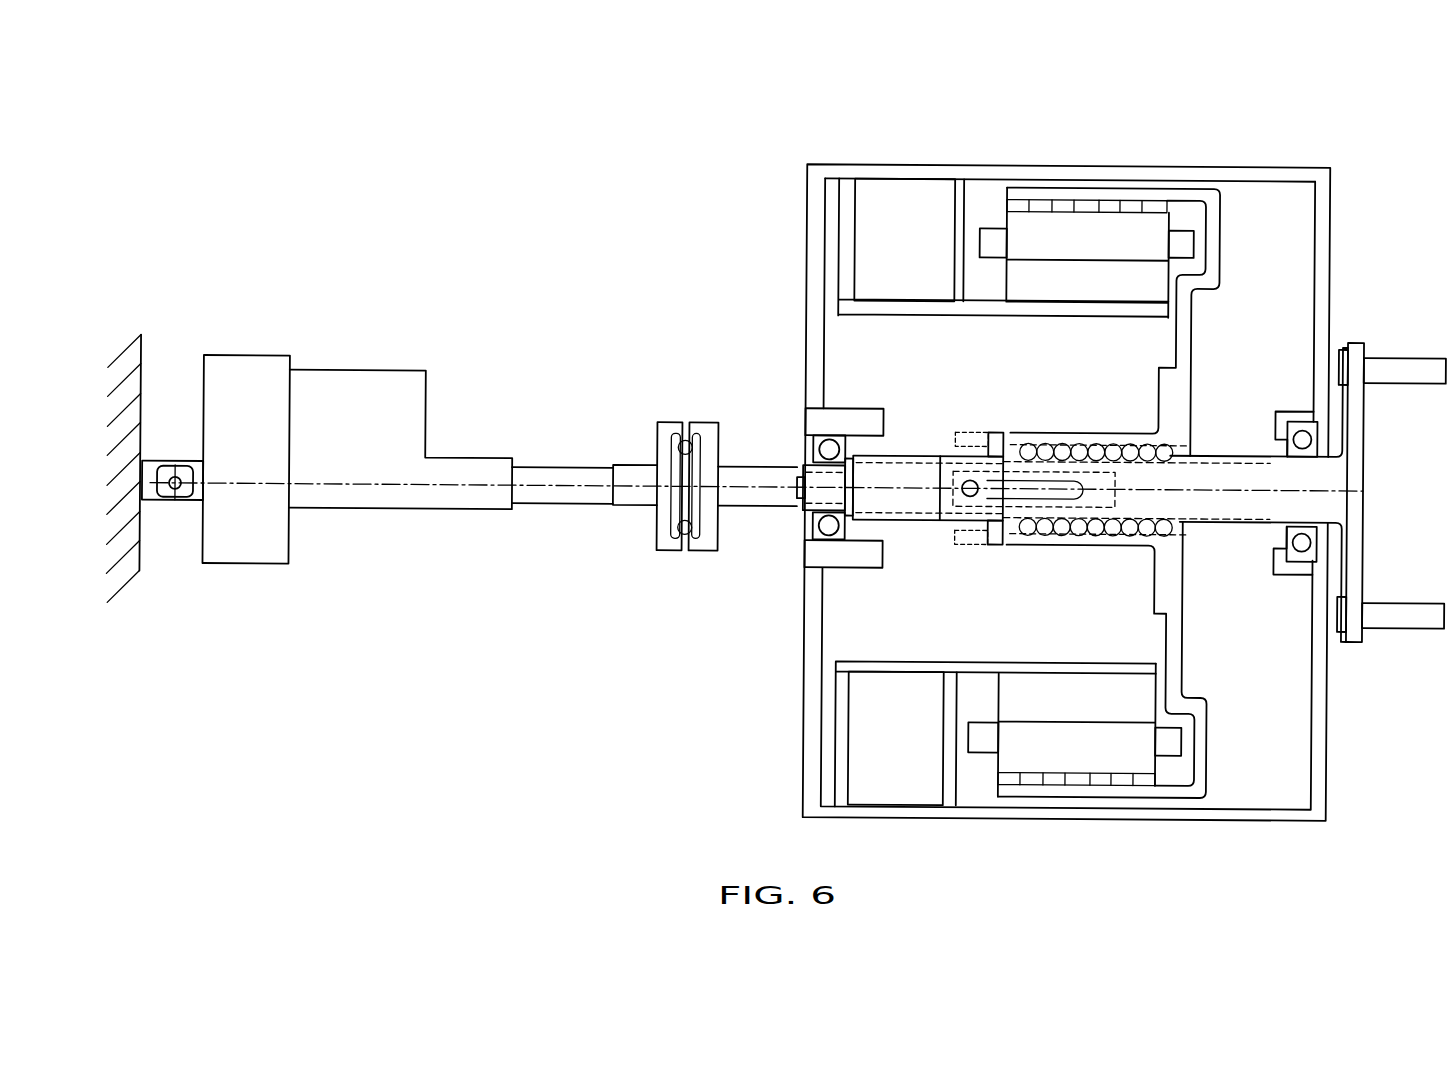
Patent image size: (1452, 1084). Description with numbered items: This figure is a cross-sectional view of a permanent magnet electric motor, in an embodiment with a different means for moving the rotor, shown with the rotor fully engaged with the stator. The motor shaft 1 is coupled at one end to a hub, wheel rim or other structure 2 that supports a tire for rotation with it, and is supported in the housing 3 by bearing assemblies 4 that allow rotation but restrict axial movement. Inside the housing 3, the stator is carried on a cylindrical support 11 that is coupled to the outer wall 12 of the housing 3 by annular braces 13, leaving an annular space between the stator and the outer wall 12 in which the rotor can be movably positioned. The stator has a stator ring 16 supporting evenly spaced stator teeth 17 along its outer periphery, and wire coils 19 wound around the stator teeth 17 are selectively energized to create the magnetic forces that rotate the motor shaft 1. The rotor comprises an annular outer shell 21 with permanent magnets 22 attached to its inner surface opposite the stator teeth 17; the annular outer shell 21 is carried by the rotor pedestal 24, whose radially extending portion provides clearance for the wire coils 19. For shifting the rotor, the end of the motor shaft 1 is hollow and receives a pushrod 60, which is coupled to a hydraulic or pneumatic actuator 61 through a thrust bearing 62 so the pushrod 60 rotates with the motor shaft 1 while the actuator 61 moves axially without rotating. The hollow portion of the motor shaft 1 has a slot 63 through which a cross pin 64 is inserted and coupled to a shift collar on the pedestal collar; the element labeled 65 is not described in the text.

The motor shaft 1 is at (1237, 475).
The hub, wheel rim or other structure 2 is at (1405, 334).
The housing 3 is at (806, 313).
The bearing assemblies 4 is at (798, 442).
The cylindrical support 11 is at (962, 305).
The outer wall 12 is at (1062, 178).
The annular braces 13 is at (955, 243).
The stator ring 16 is at (1059, 295).
The stator teeth 17 is at (1059, 250).
The wire coils 19 is at (990, 237).
The annular outer shell 21 is at (1180, 193).
The permanent magnets 22 is at (1060, 783).
The rotor pedestal 24 is at (1208, 317).
The pushrod 60 is at (763, 502).
The hydraulic or pneumatic actuator 61 is at (374, 498).
The thrust bearing 62 is at (681, 411).
The slot 63 is at (1052, 497).
The cross pin 64 is at (962, 473).
The guide block 65 is at (966, 427).